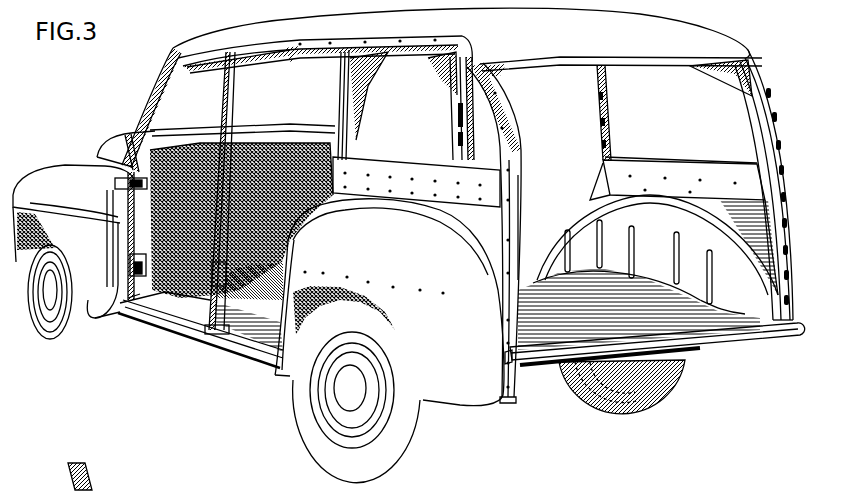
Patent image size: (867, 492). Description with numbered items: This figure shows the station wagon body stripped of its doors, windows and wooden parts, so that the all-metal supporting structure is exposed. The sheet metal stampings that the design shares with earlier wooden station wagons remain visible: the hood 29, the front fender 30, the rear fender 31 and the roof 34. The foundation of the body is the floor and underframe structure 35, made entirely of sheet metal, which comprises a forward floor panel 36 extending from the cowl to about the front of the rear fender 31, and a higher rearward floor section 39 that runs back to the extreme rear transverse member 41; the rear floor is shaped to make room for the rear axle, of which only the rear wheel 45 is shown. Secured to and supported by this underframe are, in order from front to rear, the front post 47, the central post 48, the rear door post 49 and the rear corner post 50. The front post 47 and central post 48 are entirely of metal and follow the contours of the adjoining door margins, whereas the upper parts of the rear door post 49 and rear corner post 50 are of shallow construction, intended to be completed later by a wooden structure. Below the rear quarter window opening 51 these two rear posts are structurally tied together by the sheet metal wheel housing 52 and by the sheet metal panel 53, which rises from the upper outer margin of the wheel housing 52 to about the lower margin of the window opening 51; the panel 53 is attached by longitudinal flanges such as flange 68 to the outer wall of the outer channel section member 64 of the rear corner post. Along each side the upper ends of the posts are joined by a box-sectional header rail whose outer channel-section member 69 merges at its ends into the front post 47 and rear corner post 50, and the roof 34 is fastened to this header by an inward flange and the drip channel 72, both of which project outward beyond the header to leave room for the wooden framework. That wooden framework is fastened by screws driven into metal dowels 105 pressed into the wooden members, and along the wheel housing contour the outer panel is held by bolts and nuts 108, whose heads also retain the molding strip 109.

The hood 29 is at (125, 142).
The front fender 30 is at (88, 300).
The rear fender 31 is at (477, 400).
The roof 34 is at (742, 47).
The floor and underframe structure 35 is at (652, 314).
The forward floor panel 36 is at (240, 310).
The rearward floor section 39 is at (690, 318).
The rear transverse member 41 is at (553, 365).
The rear wheel 45 is at (393, 465).
The front post 47 is at (165, 115).
The central post 48 is at (238, 116).
The rear door post 49 is at (355, 124).
The rear corner post 50 is at (517, 144).
The rear quarter window opening 51 is at (672, 131).
The wheel housing 52 is at (662, 264).
The sheet metal panel 53 is at (427, 170).
The outer channel section member of rear corner post 64 is at (520, 174).
The flange 68 is at (503, 217).
The outer channel-section member of header rail 69 is at (294, 52).
The drip channel 72 is at (352, 45).
The metal dowel 105 is at (343, 93).
The bolts and nuts 108 is at (693, 200).
The molding strip 109 is at (470, 262).